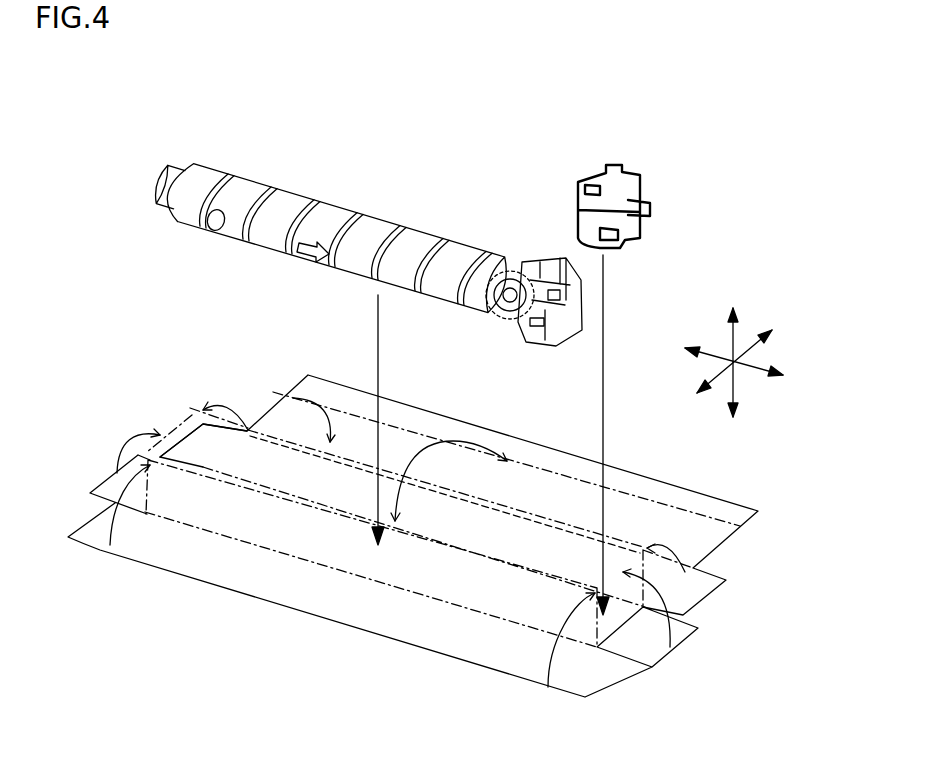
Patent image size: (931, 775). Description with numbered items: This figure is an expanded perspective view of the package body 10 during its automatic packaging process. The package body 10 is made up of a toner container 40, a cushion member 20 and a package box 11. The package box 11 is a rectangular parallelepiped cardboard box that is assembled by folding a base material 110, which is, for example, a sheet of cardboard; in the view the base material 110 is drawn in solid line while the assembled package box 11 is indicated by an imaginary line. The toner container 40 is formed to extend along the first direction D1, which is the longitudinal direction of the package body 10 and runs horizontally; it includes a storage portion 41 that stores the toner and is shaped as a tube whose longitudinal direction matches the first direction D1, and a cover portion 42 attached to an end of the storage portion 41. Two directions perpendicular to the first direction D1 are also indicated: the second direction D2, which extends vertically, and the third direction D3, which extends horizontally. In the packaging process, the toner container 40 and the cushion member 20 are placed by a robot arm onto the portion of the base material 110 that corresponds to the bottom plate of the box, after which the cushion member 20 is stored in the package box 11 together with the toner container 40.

The package body 10 is at (359, 207).
The package box 11 is at (278, 404).
The cushion member 20 is at (628, 160).
The toner container 40 is at (438, 220).
The storage portion 41 is at (376, 210).
The cover portion 42 is at (553, 257).
The base material 110 is at (455, 660).
The first direction D1 is at (763, 368).
The second direction D2 is at (733, 340).
The third direction D3 is at (720, 377).